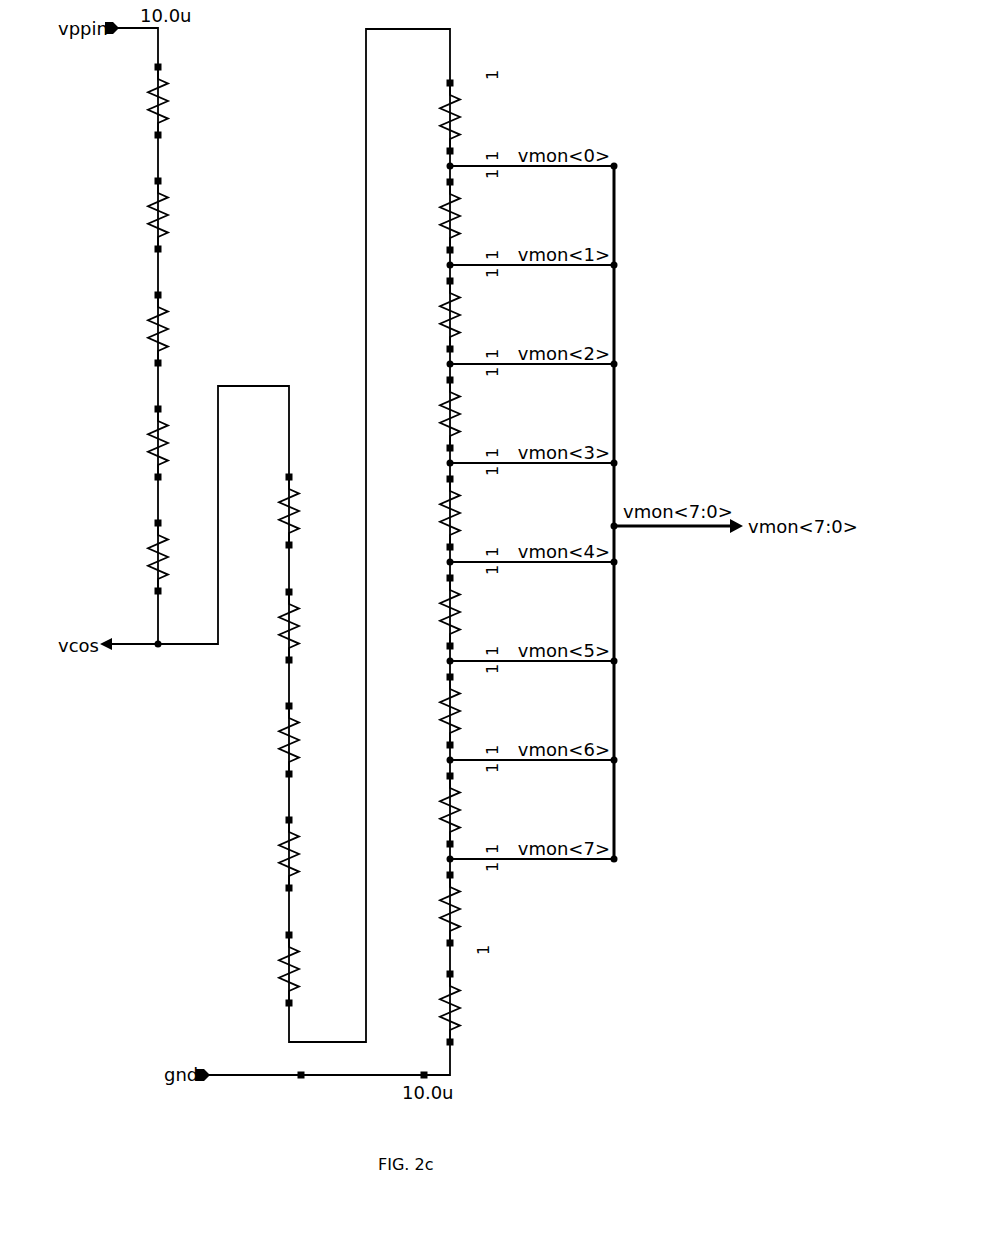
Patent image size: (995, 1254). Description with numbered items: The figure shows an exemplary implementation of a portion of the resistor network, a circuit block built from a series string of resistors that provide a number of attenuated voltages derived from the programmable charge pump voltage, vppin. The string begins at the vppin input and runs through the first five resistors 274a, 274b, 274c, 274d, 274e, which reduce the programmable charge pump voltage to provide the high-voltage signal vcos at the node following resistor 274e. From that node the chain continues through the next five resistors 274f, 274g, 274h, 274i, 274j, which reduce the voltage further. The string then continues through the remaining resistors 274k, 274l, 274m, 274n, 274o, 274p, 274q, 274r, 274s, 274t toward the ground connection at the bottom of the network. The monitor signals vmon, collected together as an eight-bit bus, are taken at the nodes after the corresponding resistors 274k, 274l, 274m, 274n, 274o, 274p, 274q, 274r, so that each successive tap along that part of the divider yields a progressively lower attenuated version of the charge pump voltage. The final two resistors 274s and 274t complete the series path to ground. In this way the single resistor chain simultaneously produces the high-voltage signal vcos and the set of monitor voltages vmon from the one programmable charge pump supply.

The resistor 274a is at (120, 91).
The resistor 274b is at (120, 203).
The resistor 274c is at (120, 317).
The resistor 274d is at (120, 431).
The resistor 274e is at (120, 545).
The resistor 274f is at (301, 496).
The resistor 274g is at (263, 644).
The resistor 274h is at (249, 733).
The resistor 274i is at (249, 847).
The resistor 274j is at (245, 959).
The resistor 274k is at (490, 116).
The resistor 274l is at (490, 215).
The resistor 274m is at (490, 314).
The resistor 274n is at (490, 413).
The resistor 274o is at (490, 512).
The resistor 274p is at (490, 611).
The resistor 274q is at (490, 710).
The resistor 274r is at (490, 809).
The resistor 274s is at (490, 908).
The resistor 274t is at (490, 1008).